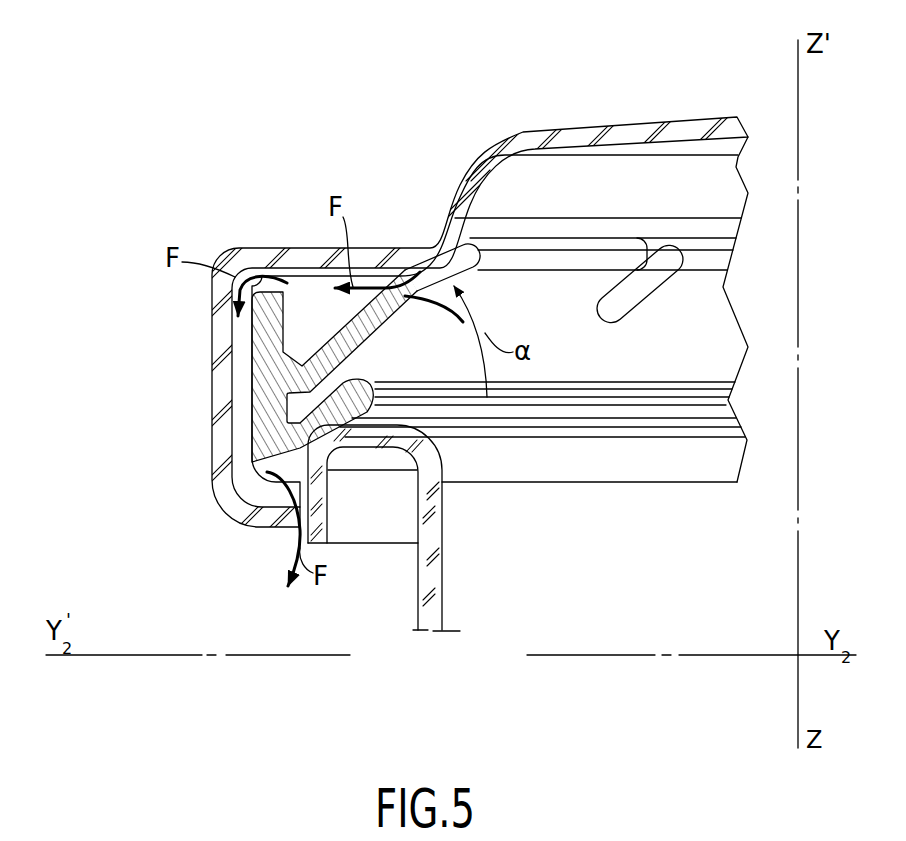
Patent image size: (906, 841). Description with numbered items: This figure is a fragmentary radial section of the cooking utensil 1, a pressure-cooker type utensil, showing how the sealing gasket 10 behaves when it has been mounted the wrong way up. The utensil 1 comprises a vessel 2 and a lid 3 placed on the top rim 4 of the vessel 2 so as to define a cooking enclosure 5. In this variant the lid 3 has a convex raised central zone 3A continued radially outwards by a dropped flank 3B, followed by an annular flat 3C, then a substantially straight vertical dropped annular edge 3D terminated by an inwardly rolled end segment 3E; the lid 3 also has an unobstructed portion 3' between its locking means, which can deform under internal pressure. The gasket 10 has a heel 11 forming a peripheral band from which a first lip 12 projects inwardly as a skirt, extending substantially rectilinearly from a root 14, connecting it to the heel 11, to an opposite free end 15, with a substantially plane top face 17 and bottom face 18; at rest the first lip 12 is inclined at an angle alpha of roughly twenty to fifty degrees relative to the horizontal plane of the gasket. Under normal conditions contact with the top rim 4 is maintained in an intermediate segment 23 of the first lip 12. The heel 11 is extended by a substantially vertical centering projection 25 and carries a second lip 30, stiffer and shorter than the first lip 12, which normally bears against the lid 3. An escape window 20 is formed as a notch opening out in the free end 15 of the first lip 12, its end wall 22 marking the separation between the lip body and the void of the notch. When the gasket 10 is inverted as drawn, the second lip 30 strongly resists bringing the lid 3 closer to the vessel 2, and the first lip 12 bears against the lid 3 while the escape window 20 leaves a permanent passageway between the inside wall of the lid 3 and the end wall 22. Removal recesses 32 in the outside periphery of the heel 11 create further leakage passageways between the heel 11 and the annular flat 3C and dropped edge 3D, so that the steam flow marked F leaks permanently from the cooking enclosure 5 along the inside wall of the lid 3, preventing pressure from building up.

The cooking utensil 1 is at (266, 146).
The vessel 2 is at (424, 601).
The lid 3 is at (472, 285).
The convex and raised central zone 3A is at (685, 133).
The dropped flank 3B is at (463, 200).
The annular flat 3C is at (368, 263).
The dropped annular edge 3D is at (222, 317).
The inwardly rolled end segment 3E is at (267, 520).
The unobstructed portion 3' is at (427, 121).
The top rim 4 is at (388, 460).
The cooking enclosure 5 is at (607, 552).
The sealing gasket 10 is at (267, 435).
The heel 11 is at (282, 462).
The first lip 12 is at (377, 359).
The root 14 is at (296, 378).
The free end 15 is at (480, 253).
The top face 17 is at (590, 364).
The bottom face 18 is at (403, 275).
The escape window 20 is at (439, 279).
The end wall 22 is at (404, 305).
The intermediate segment 23 is at (344, 344).
The centering projection 25 is at (265, 325).
The second lip 30 is at (343, 449).
The removal recesses 32 is at (240, 392).